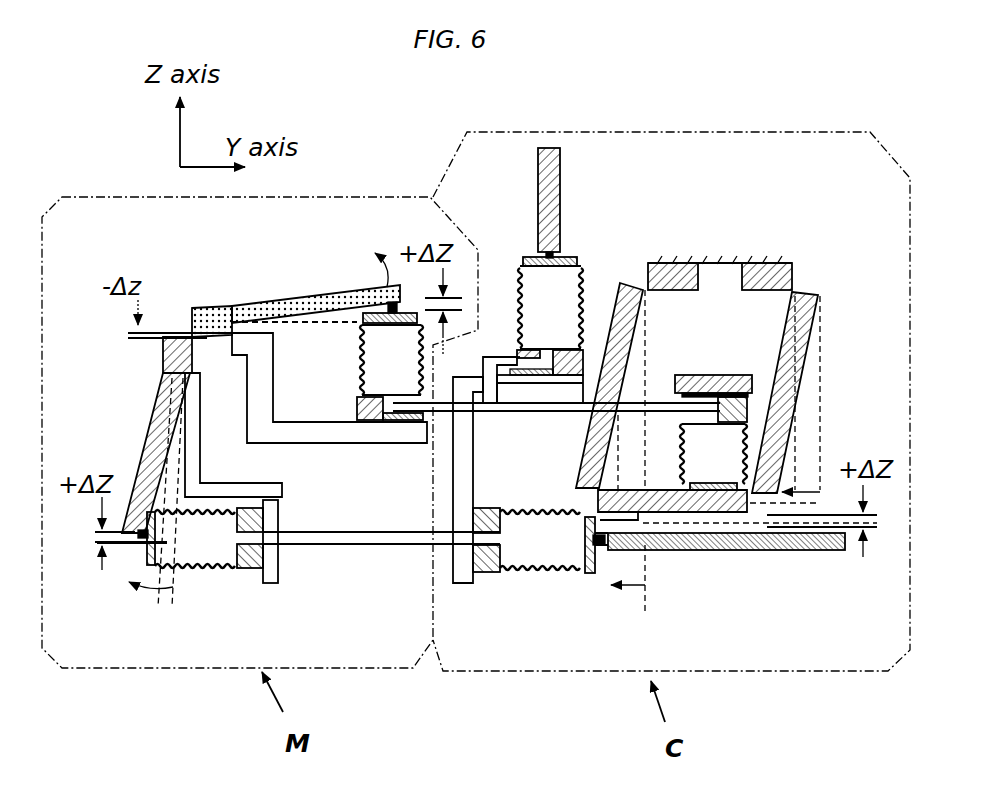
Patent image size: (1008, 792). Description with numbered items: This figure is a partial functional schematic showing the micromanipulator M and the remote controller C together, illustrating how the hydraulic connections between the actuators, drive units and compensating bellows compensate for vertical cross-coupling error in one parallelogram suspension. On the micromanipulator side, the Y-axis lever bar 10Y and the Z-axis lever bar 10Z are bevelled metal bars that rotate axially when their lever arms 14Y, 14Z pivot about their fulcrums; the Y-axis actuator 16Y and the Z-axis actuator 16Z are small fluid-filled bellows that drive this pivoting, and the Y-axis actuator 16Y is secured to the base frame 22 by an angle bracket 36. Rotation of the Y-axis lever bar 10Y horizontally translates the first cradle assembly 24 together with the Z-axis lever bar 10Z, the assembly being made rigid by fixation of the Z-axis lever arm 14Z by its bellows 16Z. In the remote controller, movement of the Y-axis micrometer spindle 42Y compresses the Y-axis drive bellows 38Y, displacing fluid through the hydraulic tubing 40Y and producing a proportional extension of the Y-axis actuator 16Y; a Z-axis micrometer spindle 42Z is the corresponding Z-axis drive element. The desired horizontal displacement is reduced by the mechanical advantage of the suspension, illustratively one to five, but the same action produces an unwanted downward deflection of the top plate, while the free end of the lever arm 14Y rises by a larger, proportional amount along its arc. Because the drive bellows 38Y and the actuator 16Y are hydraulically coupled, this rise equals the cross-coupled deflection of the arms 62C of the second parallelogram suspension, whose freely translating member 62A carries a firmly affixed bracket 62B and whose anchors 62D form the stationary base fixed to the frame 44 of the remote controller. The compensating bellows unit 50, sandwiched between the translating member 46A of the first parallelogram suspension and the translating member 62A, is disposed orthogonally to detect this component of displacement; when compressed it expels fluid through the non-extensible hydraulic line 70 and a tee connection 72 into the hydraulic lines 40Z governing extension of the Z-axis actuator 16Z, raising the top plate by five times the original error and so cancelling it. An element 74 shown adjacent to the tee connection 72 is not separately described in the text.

The Z-axis lever bar 10Z is at (210, 313).
The Y-axis lever bar 10Y is at (165, 354).
The Z-axis lever arm 14Z is at (310, 292).
The Y-axis lever arm 14Y is at (148, 443).
The Z-axis actuator 16Z is at (360, 388).
The Y-axis actuator 16Y is at (197, 570).
The base frame 22 is at (260, 490).
The first cradle assembly 24 is at (368, 433).
The angle bracket 36 is at (278, 560).
The Y-axis drive bellows 38Y is at (585, 293).
The Z-axis hydraulic lines 40Z is at (445, 415).
The Y-axis hydraulic tubing 40Y is at (343, 546).
The Z-direction drive lever 42Z is at (537, 222).
The Y-axis micrometer spindle 42Y is at (718, 553).
The frame of the remote controller 44 is at (675, 258).
The freely translating member 46A is at (697, 377).
The compensating bellows unit 50 is at (682, 466).
The translating member 62A is at (602, 503).
The bracket 62B is at (595, 577).
The arms 62C is at (790, 438).
The anchors 62D is at (771, 265).
The non-extensible hydraulic line 70 is at (537, 410).
The tee connection 72 is at (492, 412).
The link member 74 is at (500, 355).